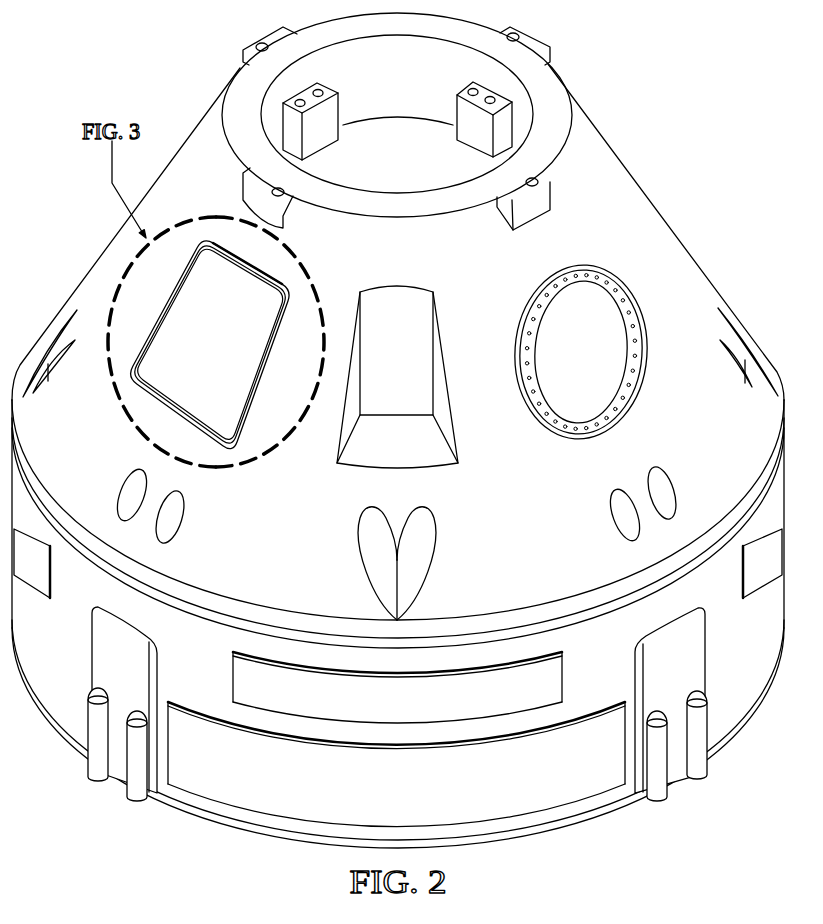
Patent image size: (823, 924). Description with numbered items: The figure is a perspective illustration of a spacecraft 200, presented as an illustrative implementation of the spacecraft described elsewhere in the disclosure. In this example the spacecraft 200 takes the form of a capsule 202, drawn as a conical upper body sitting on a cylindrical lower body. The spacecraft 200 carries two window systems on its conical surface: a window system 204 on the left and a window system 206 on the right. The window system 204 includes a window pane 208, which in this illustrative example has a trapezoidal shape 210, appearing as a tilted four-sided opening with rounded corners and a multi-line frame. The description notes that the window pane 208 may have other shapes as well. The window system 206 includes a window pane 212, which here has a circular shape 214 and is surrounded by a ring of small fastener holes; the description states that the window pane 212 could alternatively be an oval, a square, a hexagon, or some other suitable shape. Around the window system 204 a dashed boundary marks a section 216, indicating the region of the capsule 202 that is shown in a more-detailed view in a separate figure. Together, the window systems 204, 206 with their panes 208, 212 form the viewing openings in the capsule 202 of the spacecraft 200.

The spacecraft 200 is at (608, 140).
The capsule 202 is at (683, 194).
The window system 204 is at (287, 283).
The window system 206 is at (610, 280).
The window pane 208 is at (225, 355).
The trapezoidal shape 210 is at (218, 453).
The window pane 212 is at (605, 363).
The circular shape 214 is at (640, 408).
The section 216 is at (128, 420).